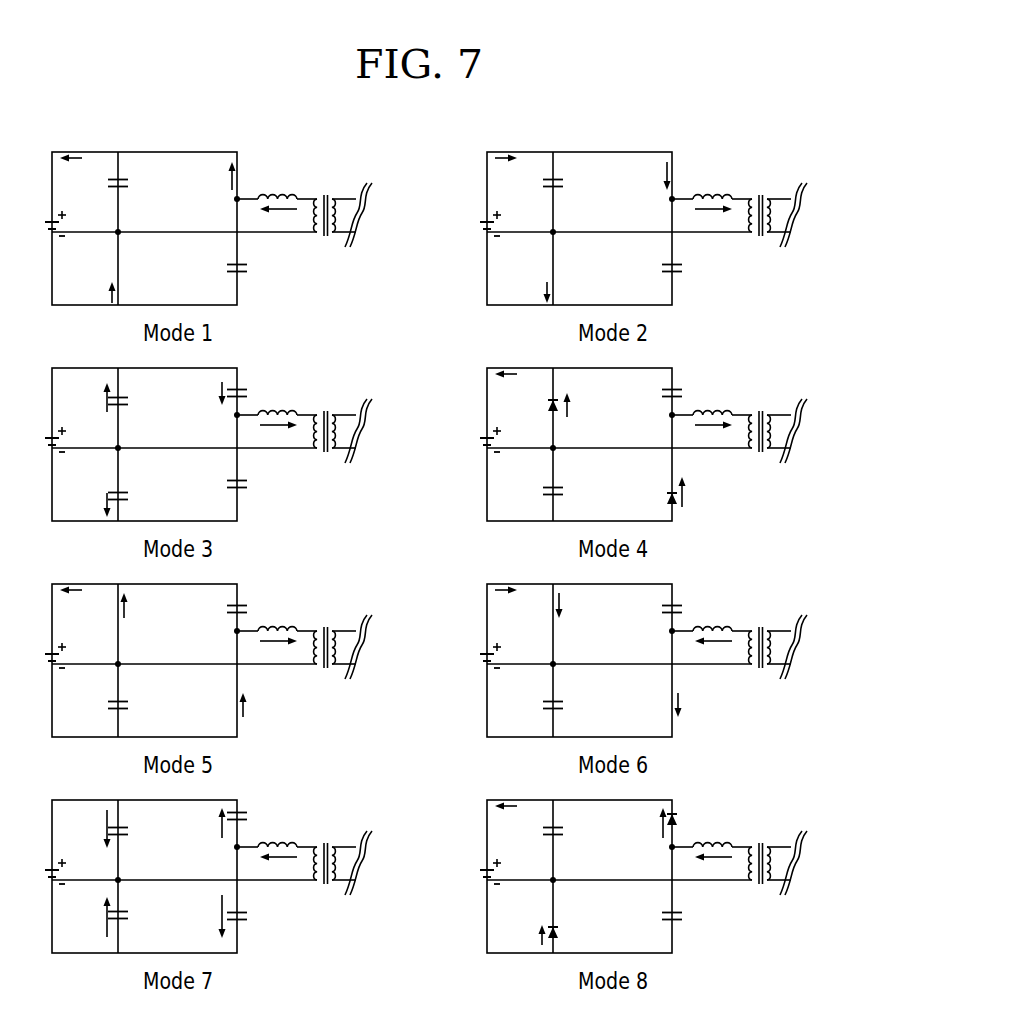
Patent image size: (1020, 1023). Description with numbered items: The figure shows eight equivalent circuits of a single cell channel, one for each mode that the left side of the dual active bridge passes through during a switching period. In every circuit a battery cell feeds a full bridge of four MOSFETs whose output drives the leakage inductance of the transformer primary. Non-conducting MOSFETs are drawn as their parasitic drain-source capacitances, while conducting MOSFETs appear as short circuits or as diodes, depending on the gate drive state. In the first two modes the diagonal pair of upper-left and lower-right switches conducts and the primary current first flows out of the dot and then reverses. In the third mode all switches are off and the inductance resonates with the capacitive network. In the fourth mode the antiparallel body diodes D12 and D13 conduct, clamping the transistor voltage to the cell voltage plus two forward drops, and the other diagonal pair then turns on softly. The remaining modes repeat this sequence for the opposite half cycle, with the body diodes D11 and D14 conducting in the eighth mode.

The antiparallel body diode of Q11 D11 is at (687, 817).
The antiparallel body diode of Q12 D12 is at (544, 404).
The antiparallel body diode of Q13 D13 is at (659, 495).
The antiparallel body diode of Q14 D14 is at (567, 934).